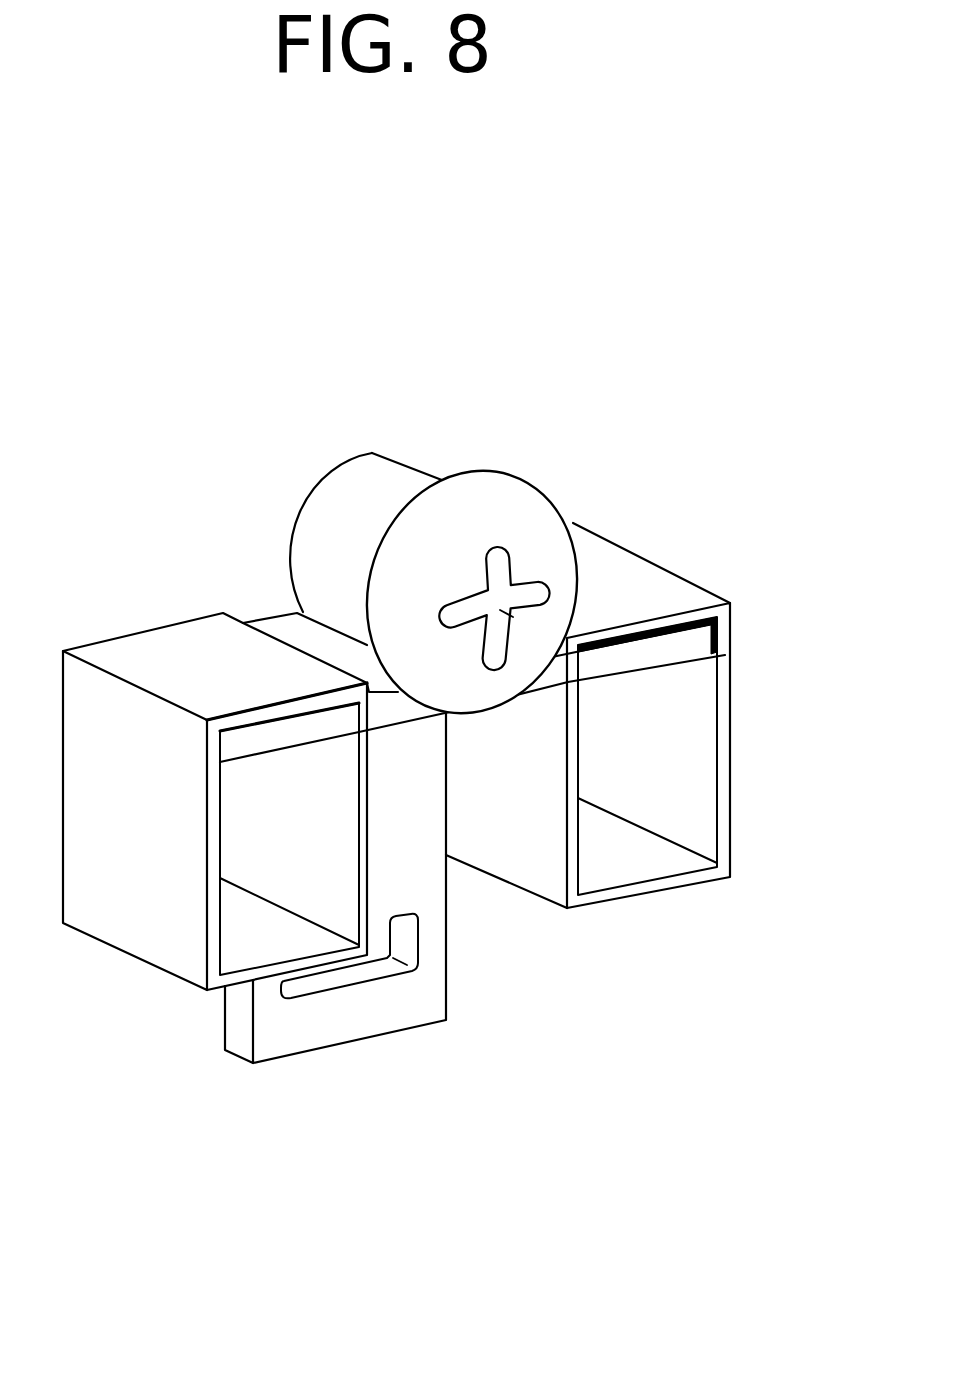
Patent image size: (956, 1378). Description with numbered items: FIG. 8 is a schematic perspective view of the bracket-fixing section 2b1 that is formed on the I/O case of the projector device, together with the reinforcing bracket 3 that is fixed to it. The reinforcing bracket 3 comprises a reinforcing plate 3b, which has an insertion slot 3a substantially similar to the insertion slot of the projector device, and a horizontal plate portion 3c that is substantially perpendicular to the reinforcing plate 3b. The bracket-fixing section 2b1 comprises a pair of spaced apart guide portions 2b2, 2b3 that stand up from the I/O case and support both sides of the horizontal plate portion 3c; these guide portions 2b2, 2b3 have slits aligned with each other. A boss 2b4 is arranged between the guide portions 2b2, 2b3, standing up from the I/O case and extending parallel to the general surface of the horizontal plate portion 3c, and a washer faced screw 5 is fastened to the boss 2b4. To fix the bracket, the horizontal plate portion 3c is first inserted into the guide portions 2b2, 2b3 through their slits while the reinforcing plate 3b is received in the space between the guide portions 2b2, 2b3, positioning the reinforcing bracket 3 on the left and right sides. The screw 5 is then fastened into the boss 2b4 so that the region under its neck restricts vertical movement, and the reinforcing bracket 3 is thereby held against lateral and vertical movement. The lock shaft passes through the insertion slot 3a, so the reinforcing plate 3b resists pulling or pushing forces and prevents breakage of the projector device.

The bracket-fixing section 2b1 is at (422, 771).
The guide portion 2b2 is at (147, 645).
The guide portion 2b3 is at (645, 578).
The boss 2b4 is at (345, 468).
The washer faced screw 5 is at (543, 507).
The reinforcing bracket 3 is at (495, 865).
The insertion slot 3a is at (357, 975).
The reinforcing plate 3b is at (237, 1025).
The horizontal plate portion 3c is at (680, 645).